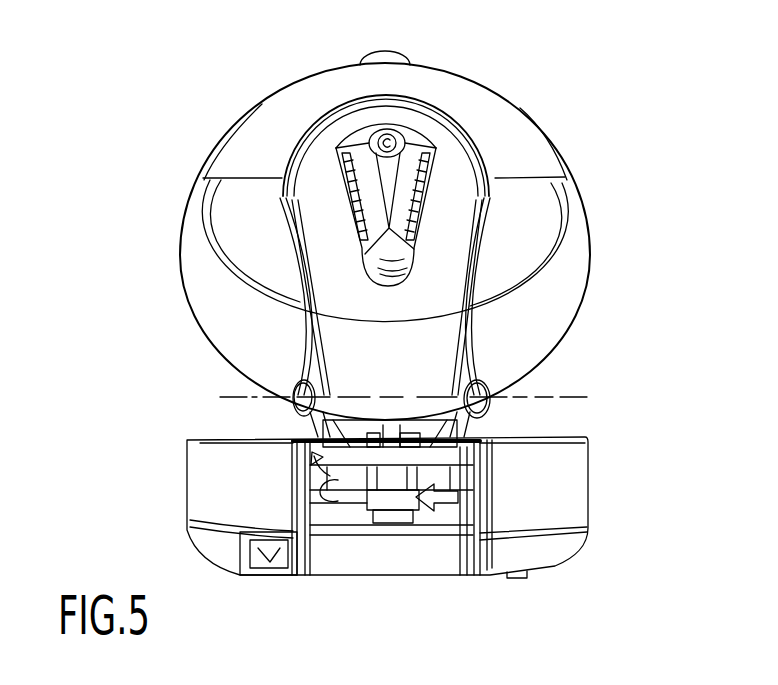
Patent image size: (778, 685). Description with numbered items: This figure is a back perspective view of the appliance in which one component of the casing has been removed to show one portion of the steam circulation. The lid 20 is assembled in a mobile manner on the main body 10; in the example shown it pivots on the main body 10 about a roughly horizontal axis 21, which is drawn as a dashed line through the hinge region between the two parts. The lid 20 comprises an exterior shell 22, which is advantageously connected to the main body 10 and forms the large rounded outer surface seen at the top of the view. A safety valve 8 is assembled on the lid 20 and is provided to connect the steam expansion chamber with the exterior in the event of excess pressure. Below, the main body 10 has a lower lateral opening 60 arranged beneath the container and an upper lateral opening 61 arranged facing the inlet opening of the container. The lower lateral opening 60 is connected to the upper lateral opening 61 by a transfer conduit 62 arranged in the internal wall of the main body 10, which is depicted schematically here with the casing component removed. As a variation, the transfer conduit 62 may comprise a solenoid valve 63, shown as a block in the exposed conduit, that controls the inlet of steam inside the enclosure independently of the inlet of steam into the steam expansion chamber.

The safety valve 8 is at (390, 140).
The main body 10 is at (600, 484).
The lid 20 is at (552, 122).
The horizontal axis 21 is at (567, 397).
The exterior shell 22 is at (583, 240).
The lower lateral opening 60 is at (458, 497).
The upper lateral opening 61 is at (300, 466).
The transfer conduit 62 is at (300, 497).
The solenoid valve 63 is at (397, 503).